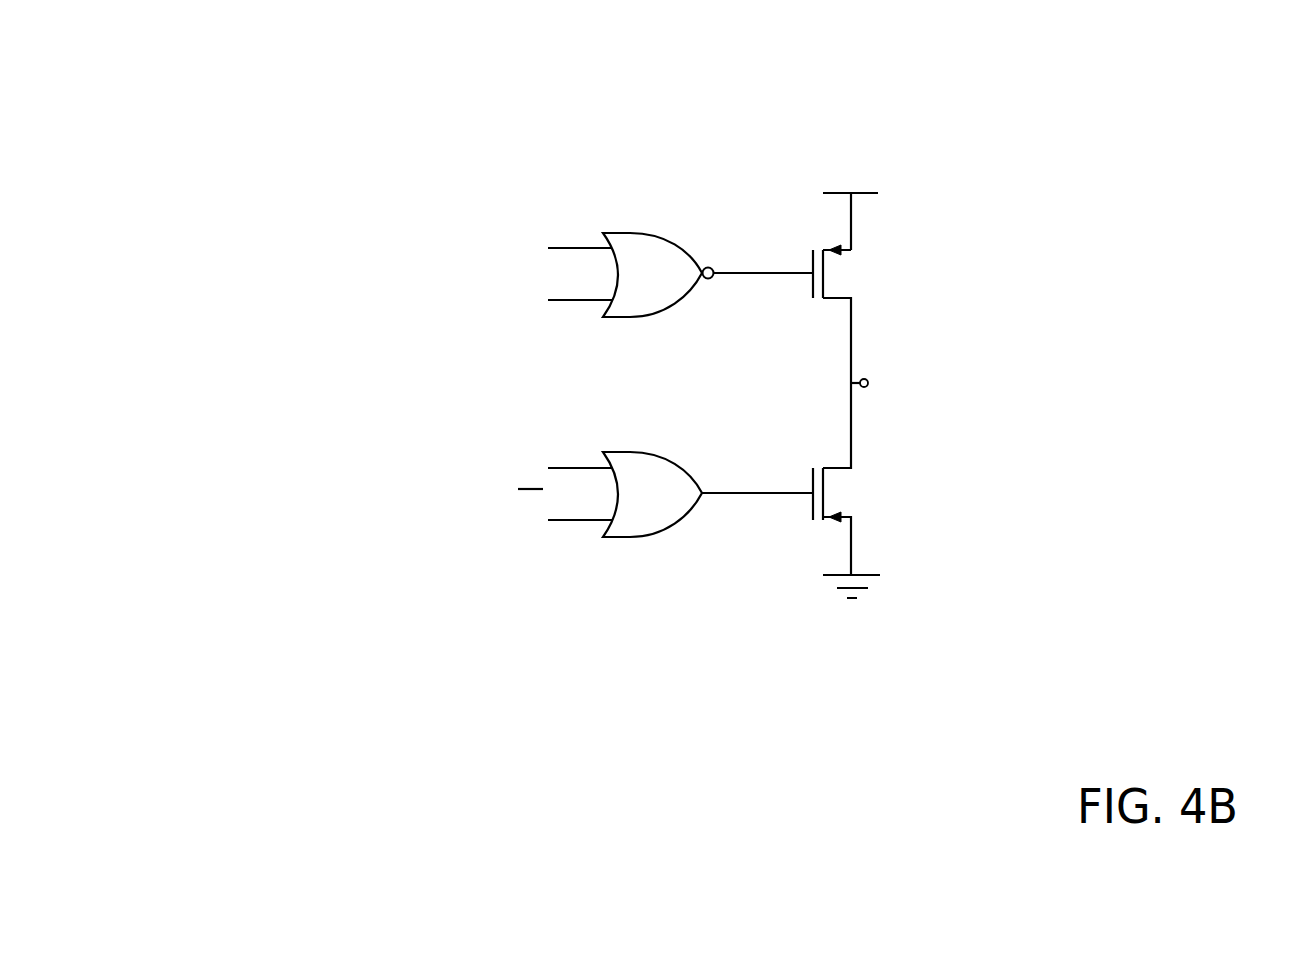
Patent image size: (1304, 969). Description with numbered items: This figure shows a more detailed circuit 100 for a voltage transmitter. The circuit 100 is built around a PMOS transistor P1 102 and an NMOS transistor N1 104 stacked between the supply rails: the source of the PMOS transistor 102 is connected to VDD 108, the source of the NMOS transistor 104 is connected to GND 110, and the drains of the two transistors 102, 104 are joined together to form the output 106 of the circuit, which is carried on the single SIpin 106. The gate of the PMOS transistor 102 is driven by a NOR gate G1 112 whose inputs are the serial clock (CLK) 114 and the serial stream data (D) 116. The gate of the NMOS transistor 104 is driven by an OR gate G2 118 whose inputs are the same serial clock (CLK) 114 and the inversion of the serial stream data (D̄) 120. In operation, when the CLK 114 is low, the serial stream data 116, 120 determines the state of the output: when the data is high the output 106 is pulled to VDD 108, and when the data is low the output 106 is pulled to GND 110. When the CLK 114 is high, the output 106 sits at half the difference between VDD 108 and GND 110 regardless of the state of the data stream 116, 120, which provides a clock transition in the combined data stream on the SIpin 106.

The circuit 100 is at (360, 52).
The PMOS transistor P1 102 is at (866, 256).
The NMOS transistor N1 104 is at (880, 486).
The output 106 is at (958, 381).
The VDD 108 is at (878, 167).
The GND 110 is at (873, 571).
The NOR gate G1 112 is at (656, 240).
The serial clock (CLK) 114 is at (468, 238).
The serial stream data (D) 116 is at (498, 296).
The OR gate G2 118 is at (665, 455).
The inversion of the serial stream data (D̄) 120 is at (510, 518).